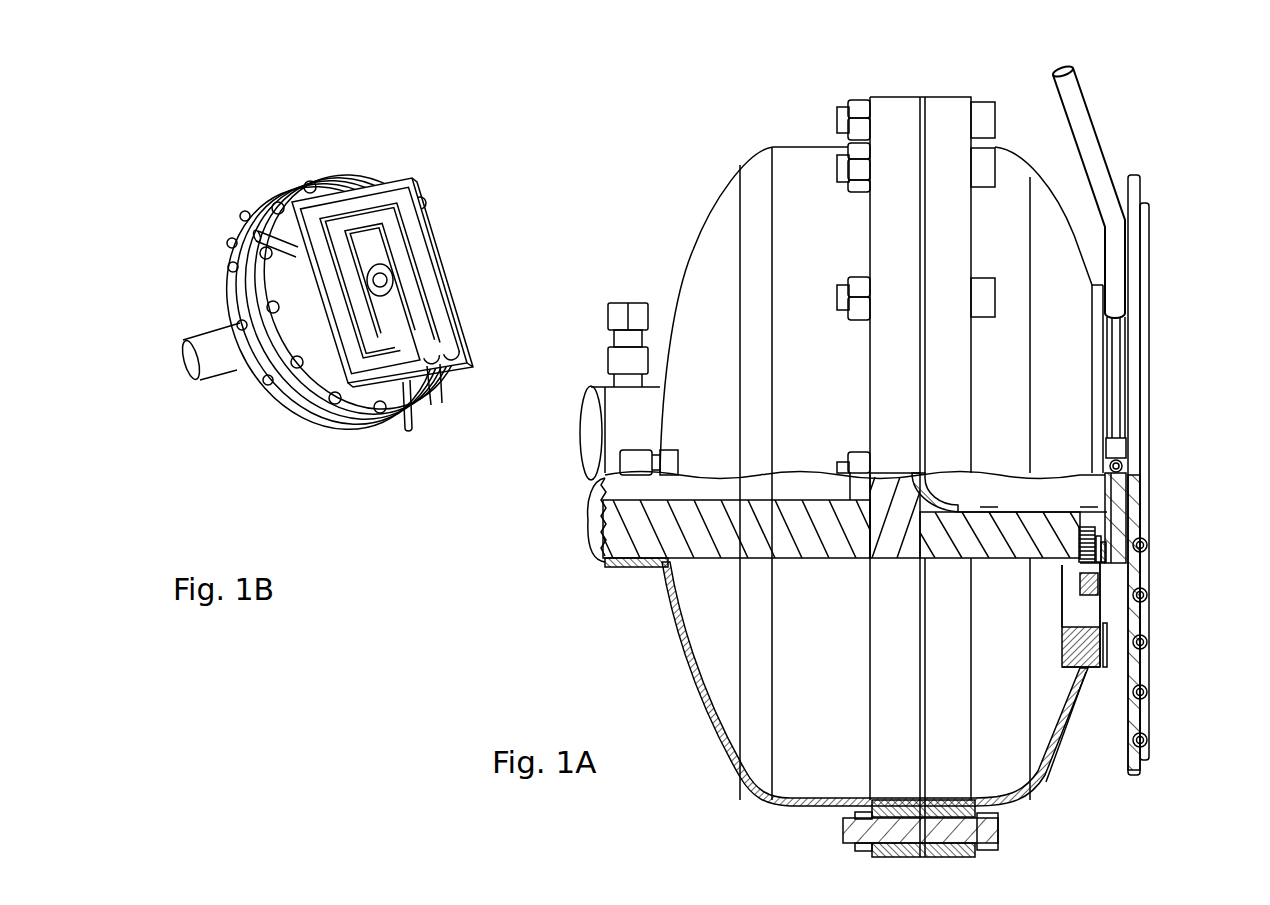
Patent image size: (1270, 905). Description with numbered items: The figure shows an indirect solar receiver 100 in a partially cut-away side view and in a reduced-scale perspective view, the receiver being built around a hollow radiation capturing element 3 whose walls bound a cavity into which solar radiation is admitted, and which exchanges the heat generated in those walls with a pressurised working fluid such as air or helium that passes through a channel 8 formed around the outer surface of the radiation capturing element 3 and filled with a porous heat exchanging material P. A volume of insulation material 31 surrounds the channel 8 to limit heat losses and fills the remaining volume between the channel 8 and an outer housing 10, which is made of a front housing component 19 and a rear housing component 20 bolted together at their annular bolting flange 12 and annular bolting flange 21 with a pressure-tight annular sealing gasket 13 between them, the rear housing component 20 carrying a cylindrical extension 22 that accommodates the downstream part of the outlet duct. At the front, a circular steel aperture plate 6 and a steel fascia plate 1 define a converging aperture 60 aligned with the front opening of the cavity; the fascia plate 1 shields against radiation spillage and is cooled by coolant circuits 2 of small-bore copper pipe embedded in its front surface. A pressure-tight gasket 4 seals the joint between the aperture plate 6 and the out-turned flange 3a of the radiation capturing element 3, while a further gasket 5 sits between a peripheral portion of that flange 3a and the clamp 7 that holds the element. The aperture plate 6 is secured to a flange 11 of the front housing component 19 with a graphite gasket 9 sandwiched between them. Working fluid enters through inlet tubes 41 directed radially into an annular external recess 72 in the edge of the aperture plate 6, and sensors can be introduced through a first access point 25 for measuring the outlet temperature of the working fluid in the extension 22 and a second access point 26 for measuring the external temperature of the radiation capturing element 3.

In FIG. 1A, the indirect solar receiver 100 is at (785, 135).
In FIG. 1B, the indirect solar receiver 100 is at (168, 195).
In FIG. 1A, the fascia plate 1 is at (1141, 183).
In FIG. 1B, the fascia plate 1 is at (413, 177).
In FIG. 1A, the coolant circuits 2 is at (1146, 216).
In FIG. 1B, the coolant circuits 2 is at (437, 386).
In FIG. 1A, the radiation capturing element 3 is at (1097, 515).
In FIG. 1A, the out-turned flange 3a is at (1093, 527).
In FIG. 1A, the pressure-tight gasket 4 is at (1096, 546).
In FIG. 1A, the gasket 5 is at (1103, 556).
In FIG. 1A, the aperture plate 6 is at (1120, 565).
In FIG. 1A, the clamp 7 is at (1103, 583).
In FIG. 1A, the channel 8 is at (998, 560).
In FIG. 1A, the graphite gasket 9 is at (1107, 647).
In FIG. 1A, the outer housing 10 is at (1092, 696).
In FIG. 1B, the outer housing 10 is at (258, 392).
In FIG. 1A, the flange 11 is at (1083, 683).
In FIG. 1A, the annular bolting flange 12 is at (978, 817).
In FIG. 1A, the pressure-tight annular sealing gasket 13 is at (924, 846).
In FIG. 1A, the front housing component 19 is at (1082, 697).
In FIG. 1A, the rear housing component 20 is at (740, 790).
In FIG. 1A, the annular bolting flange 21 is at (857, 822).
In FIG. 1A, the cylindrical extension 22 is at (633, 562).
In FIG. 1A, the first access point 25 is at (622, 305).
In FIG. 1A, the second access point 26 is at (622, 456).
In FIG. 1A, the insulation material 31 is at (737, 539).
In FIG. 1A, the inlet tube 41 is at (1080, 111).
In FIG. 1B, the inlet tube 41 is at (280, 240).
In FIG. 1A, the aperture 60 is at (1148, 545).
In FIG. 1B, the aperture 60 is at (390, 278).
In FIG. 1A, the annular external recess 72 is at (1117, 360).
In FIG. 1A, the porous heat exchanging material P is at (1050, 562).